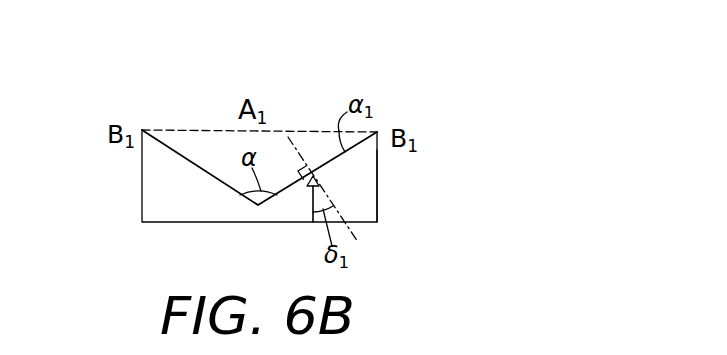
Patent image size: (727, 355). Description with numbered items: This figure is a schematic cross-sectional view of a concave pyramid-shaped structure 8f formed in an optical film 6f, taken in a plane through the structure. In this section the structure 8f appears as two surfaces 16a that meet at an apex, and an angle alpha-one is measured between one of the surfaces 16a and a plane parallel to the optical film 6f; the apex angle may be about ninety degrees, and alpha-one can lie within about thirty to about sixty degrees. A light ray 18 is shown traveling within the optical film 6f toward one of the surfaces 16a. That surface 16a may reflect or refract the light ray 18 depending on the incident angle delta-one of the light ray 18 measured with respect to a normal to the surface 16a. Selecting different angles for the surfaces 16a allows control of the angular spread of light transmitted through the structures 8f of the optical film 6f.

The concave pyramid-shaped structure 8f is at (165, 84).
The surfaces 16a is at (192, 164).
The optical film 6f is at (366, 199).
The light ray 18 is at (314, 211).